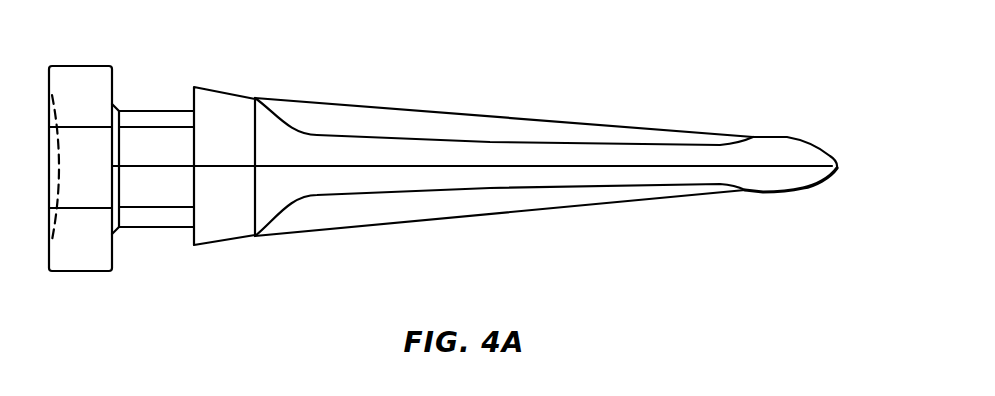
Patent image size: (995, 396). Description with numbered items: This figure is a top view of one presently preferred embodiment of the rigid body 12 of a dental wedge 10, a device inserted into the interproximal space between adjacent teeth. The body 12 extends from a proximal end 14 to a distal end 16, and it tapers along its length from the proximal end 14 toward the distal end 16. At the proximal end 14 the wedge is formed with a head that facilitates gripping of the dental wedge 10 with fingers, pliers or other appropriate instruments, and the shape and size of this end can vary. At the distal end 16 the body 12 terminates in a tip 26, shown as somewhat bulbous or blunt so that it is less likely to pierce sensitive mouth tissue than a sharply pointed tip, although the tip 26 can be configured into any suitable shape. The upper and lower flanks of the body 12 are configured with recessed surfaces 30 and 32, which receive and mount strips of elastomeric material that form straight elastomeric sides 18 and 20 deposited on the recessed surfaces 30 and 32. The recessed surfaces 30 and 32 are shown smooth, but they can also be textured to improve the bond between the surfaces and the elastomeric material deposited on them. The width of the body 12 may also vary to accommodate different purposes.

The dental wedge 10 is at (563, 107).
The body 12 is at (272, 136).
The proximal end 14 is at (75, 281).
The distal end 16 is at (813, 194).
The elastomeric side 18 is at (640, 140).
The elastomeric side 20 is at (632, 192).
The tip 26 is at (808, 153).
The recessed surface 30 is at (407, 138).
The recessed surface 32 is at (406, 196).